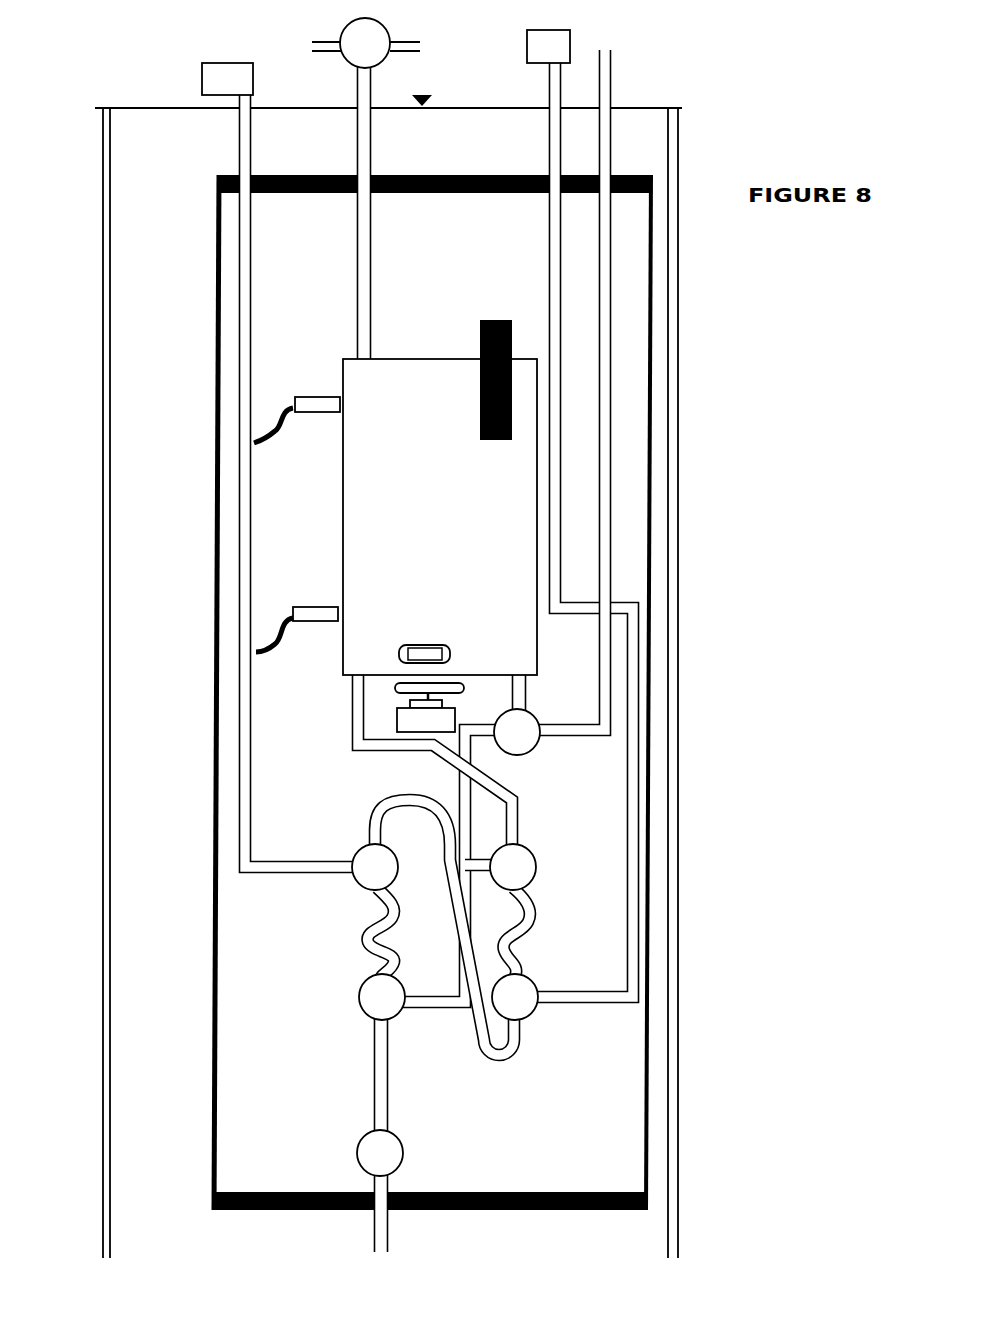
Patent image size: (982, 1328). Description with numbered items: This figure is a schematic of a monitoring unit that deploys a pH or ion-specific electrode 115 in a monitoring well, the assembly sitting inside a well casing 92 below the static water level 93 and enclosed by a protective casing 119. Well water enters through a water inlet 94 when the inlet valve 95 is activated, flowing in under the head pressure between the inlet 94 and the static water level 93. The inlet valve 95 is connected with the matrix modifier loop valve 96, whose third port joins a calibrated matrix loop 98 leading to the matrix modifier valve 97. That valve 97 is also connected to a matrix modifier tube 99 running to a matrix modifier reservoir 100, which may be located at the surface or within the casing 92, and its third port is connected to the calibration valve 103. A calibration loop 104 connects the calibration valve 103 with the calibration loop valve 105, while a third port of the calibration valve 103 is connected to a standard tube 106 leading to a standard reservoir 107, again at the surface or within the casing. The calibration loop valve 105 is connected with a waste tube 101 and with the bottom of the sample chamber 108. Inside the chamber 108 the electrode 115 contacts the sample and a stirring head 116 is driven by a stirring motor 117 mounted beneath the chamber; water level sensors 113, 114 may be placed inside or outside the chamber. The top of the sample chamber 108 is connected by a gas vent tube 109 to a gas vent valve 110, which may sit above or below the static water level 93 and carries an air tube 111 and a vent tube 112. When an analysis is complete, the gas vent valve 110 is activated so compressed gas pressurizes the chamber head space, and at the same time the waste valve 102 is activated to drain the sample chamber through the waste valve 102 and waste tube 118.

The well casing 92 is at (100, 602).
The static water level 93 is at (661, 108).
The water inlet 94 is at (403, 1237).
The inlet valve 95 is at (424, 1132).
The matrix modifier loop valve 96 is at (360, 1004).
The matrix modifier valve 97 is at (362, 857).
The calibrated matrix loop 98 is at (378, 936).
The matrix modifier tube 99 is at (298, 862).
The matrix modifier reservoir 100 is at (243, 89).
The waste tube 101 is at (416, 1000).
The waste valve 102 is at (525, 748).
The calibration valve 103 is at (530, 1005).
The calibration loop 104 is at (522, 952).
The calibration loop valve 105 is at (547, 843).
The standard tube 106 is at (627, 937).
The standard reservoir 107 is at (564, 57).
The sample chamber 108 is at (455, 553).
The gas vent tube 109 is at (358, 276).
The gas vent valve 110 is at (380, 54).
The air tube 111 is at (341, 40).
The vent tube 112 is at (394, 40).
The water level sensor 113 is at (337, 609).
The water level sensor 114 is at (336, 401).
The electrode 115 is at (480, 423).
The stirring head 116 is at (437, 640).
The stirring motor 117 is at (441, 730).
The waste tube 118 is at (611, 437).
The protective casing 119 is at (218, 502).